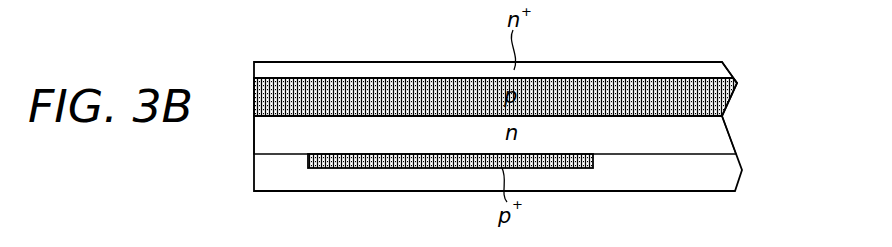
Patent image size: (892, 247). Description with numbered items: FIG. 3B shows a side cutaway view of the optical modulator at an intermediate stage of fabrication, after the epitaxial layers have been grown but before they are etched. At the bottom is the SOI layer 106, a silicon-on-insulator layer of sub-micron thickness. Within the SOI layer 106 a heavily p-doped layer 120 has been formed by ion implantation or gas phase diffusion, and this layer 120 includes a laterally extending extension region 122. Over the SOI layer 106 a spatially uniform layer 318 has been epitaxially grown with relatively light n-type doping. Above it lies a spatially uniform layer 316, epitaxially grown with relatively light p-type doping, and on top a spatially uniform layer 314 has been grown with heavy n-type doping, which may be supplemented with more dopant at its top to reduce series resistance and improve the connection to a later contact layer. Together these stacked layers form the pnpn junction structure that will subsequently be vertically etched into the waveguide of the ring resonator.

The SOI layer 106 is at (253, 176).
The spatially uniform layer 314 is at (722, 68).
The spatially uniform layer 316 is at (735, 100).
The spatially uniform layer 318 is at (722, 128).
The layer 120 is at (477, 162).
The extension region 122 is at (427, 173).